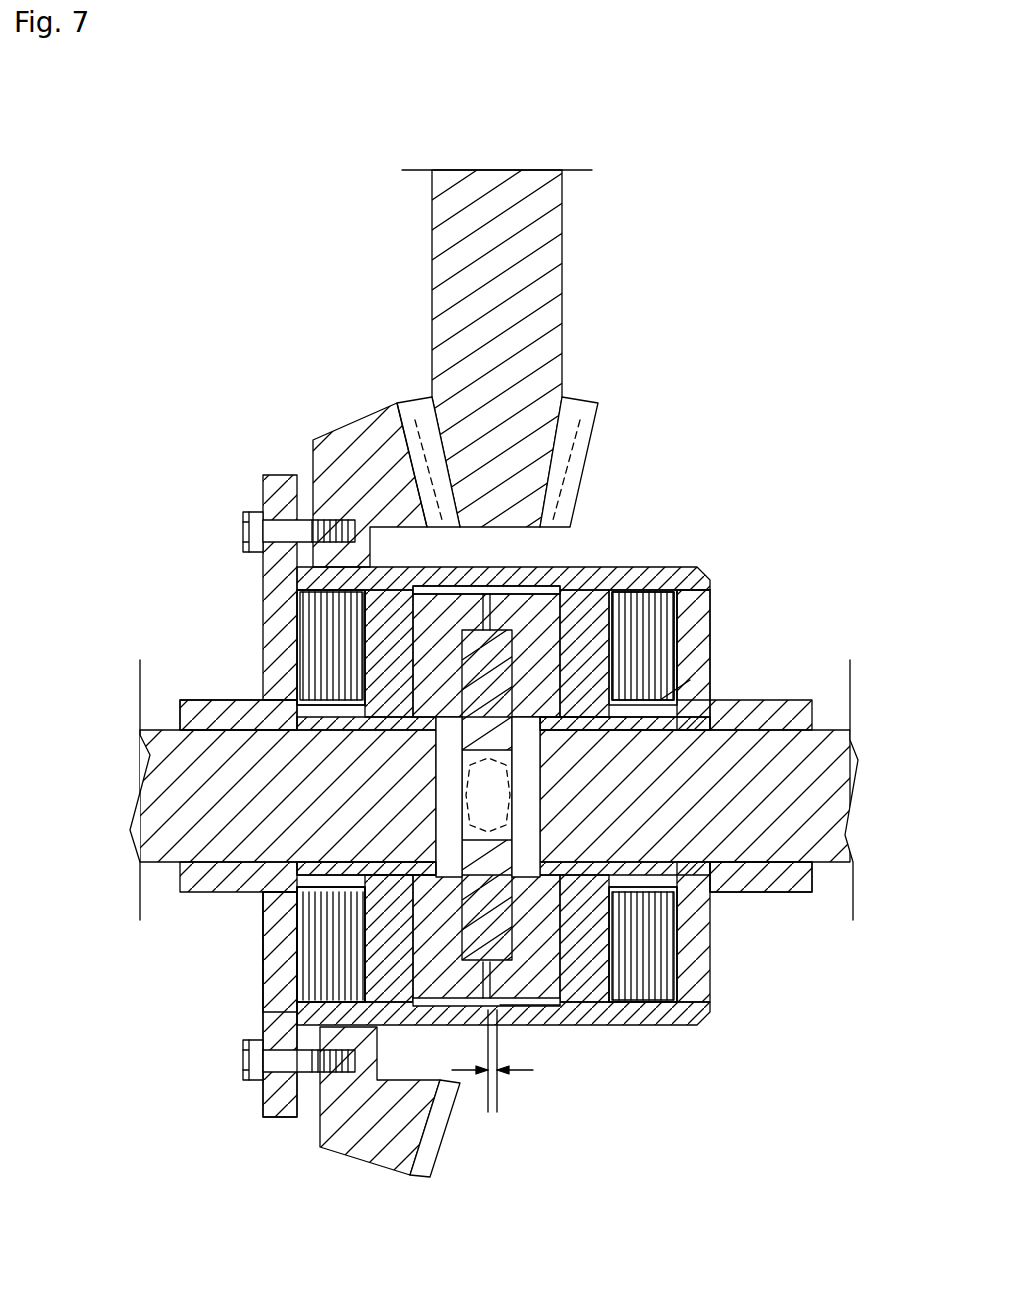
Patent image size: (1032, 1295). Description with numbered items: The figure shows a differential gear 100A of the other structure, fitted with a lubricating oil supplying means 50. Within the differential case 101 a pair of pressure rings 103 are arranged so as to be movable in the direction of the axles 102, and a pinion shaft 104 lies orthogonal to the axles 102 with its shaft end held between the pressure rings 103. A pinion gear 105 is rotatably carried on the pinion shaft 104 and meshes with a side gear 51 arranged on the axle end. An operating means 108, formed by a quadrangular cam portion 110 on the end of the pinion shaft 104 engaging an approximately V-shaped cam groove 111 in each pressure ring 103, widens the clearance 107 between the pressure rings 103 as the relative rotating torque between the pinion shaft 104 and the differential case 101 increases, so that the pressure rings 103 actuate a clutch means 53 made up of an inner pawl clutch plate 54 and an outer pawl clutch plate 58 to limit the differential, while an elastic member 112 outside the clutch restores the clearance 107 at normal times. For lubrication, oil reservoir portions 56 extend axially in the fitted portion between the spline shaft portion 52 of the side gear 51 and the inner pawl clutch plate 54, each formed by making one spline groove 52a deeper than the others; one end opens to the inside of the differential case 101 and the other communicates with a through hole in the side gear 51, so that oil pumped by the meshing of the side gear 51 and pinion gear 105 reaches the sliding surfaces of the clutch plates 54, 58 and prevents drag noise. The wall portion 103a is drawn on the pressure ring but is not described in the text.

The lubricating oil supplying means 50 is at (293, 707).
The side gear 51 is at (425, 690).
The spline shaft portion 52 is at (330, 690).
The spline groove 52a is at (302, 880).
The clutch means 53 is at (268, 1015).
The inner pawl clutch plate 54 is at (656, 620).
The oil reservoir portion 56 is at (640, 645).
The outer pawl clutch plate 58 is at (652, 1000).
The differential gear 100A is at (678, 462).
The differential case 101 is at (712, 650).
The axle 102 is at (850, 848).
The pressure ring 103 is at (430, 995).
The bracket wall 103a is at (690, 680).
The pinion shaft 104 is at (455, 768).
The pinion gear 105 is at (596, 590).
The clearance 107 is at (492, 1079).
The operating means 108 is at (515, 978).
The cam portion 110 is at (528, 660).
The cam groove 111 is at (486, 586).
The elastic member 112 is at (300, 960).